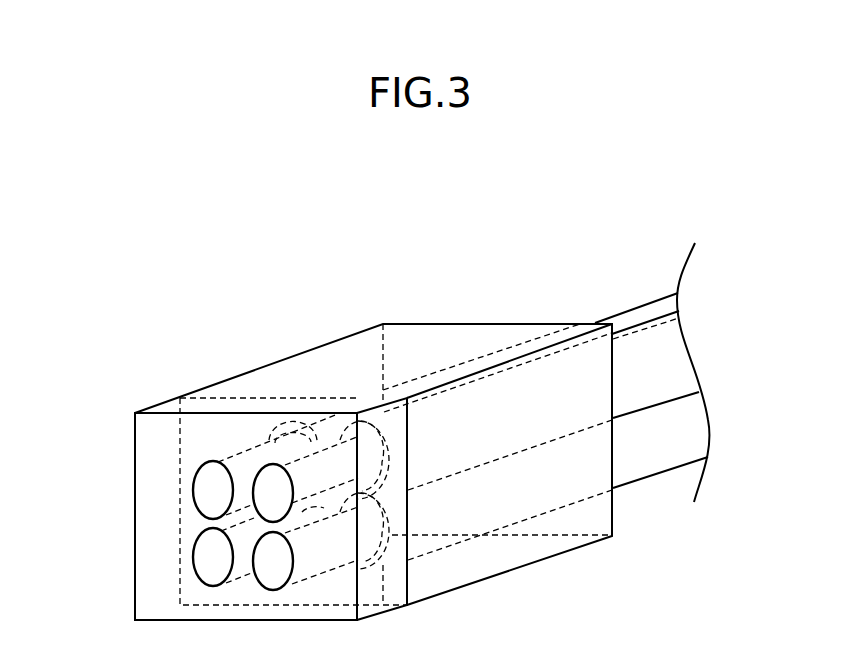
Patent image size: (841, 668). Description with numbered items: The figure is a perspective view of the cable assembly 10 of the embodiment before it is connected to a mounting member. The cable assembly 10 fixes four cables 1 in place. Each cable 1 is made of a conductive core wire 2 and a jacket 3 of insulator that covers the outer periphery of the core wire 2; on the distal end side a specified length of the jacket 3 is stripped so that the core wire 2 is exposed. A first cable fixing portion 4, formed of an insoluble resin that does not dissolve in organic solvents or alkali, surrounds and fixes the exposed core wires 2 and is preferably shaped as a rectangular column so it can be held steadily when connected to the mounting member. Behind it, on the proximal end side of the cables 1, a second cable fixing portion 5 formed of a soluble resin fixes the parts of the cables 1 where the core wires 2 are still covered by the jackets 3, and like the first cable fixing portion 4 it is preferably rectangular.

The cable 1 is at (652, 262).
The core wire 2 is at (212, 492).
The jacket 3 is at (623, 308).
The first cable fixing portion 4 is at (163, 402).
The second cable fixing portion 5 is at (321, 347).
The cable assembly 10 is at (373, 398).